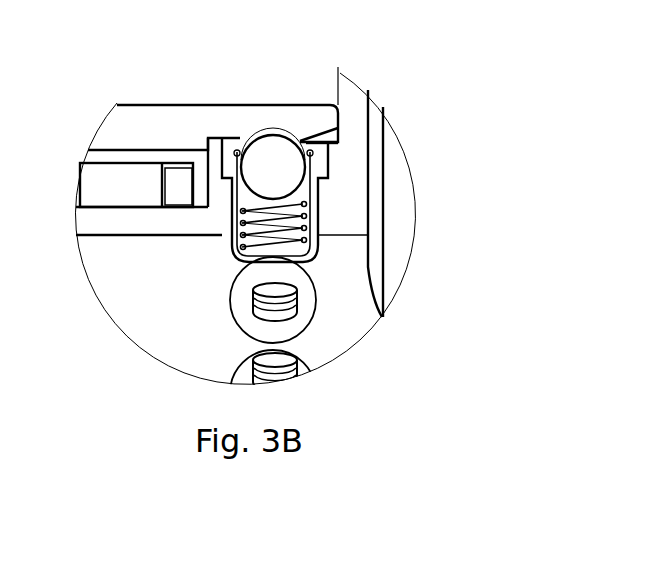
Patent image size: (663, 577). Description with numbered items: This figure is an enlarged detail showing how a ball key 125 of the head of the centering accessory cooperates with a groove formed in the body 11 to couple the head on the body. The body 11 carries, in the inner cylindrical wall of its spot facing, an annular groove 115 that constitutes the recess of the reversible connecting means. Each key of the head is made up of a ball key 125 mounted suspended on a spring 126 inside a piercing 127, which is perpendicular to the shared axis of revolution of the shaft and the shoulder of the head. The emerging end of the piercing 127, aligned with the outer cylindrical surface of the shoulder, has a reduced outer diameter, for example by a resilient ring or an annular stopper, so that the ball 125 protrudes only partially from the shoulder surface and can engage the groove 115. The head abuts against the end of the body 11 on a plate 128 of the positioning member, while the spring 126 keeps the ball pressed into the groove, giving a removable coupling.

The body 11 is at (146, 130).
The annular groove 115 is at (273, 130).
The ball key 125 is at (283, 172).
The spring 126 is at (292, 238).
The piercing 127 is at (243, 205).
The plate 128 is at (350, 128).